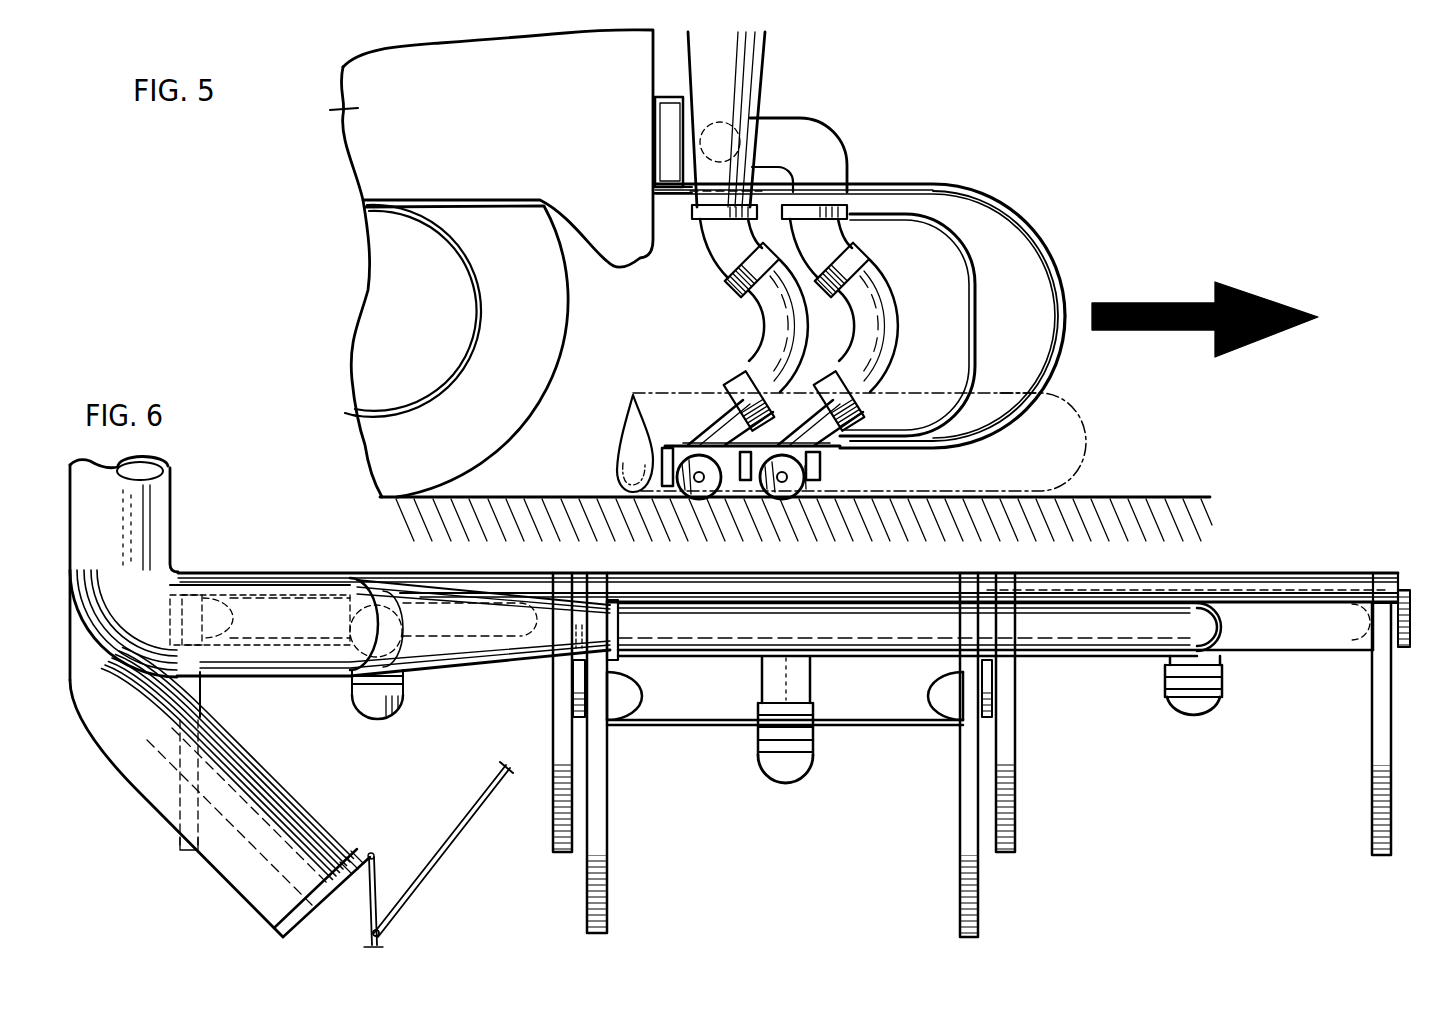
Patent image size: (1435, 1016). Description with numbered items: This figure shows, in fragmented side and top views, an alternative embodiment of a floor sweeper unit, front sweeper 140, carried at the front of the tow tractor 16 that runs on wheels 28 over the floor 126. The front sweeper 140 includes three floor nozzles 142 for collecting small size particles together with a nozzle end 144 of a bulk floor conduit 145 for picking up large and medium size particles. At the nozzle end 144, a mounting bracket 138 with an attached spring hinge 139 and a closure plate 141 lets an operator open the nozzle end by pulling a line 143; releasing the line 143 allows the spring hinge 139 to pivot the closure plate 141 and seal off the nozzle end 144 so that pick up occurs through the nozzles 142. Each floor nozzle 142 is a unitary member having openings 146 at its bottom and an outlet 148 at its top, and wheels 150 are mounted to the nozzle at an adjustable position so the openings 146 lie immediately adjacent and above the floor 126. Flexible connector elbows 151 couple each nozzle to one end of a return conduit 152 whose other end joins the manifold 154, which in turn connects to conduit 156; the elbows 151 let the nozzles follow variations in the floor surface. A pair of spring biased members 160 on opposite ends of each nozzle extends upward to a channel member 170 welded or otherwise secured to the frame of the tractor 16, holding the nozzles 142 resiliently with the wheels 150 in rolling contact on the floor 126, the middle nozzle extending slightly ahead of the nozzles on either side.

In FIG. 5, the tow tractor 16 is at (350, 109).
In FIG. 5, the wheels 28 is at (375, 440).
In FIG. 5, the floor 126 is at (1110, 497).
In FIG. 6, the mounting bracket 138 is at (346, 857).
In FIG. 6, the spring hinge 139 is at (371, 851).
In FIG. 5, the front sweeper 140 is at (946, 156).
In FIG. 6, the front sweeper 140 is at (766, 832).
In FIG. 6, the closure plate 141 is at (375, 887).
In FIG. 5, the floor nozzle 142 is at (657, 460).
In FIG. 6, the floor nozzle 142 is at (677, 700).
In FIG. 6, the line 143 is at (445, 852).
In FIG. 5, the nozzle end 144 is at (1050, 396).
In FIG. 6, the nozzle end 144 is at (262, 778).
In FIG. 6, the bulk floor conduit 145 is at (80, 660).
In FIG. 5, the openings 146 is at (746, 498).
In FIG. 5, the outlet 148 is at (708, 402).
In FIG. 5, the wheels 150 is at (758, 314).
In FIG. 6, the wheels 150 is at (574, 706).
In FIG. 6, the elbows 151 is at (795, 772).
In FIG. 5, the return conduit 152 is at (812, 138).
In FIG. 5, the manifold 154 is at (762, 62).
In FIG. 6, the conduit 156 is at (250, 592).
In FIG. 5, the spring biased members 160 is at (994, 210).
In FIG. 6, the spring biased members 160 is at (608, 852).
In FIG. 5, the channel member 170 is at (656, 142).